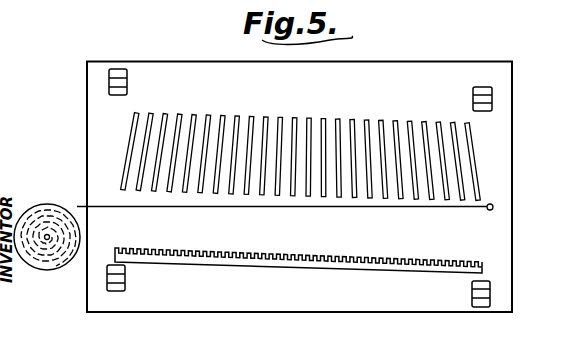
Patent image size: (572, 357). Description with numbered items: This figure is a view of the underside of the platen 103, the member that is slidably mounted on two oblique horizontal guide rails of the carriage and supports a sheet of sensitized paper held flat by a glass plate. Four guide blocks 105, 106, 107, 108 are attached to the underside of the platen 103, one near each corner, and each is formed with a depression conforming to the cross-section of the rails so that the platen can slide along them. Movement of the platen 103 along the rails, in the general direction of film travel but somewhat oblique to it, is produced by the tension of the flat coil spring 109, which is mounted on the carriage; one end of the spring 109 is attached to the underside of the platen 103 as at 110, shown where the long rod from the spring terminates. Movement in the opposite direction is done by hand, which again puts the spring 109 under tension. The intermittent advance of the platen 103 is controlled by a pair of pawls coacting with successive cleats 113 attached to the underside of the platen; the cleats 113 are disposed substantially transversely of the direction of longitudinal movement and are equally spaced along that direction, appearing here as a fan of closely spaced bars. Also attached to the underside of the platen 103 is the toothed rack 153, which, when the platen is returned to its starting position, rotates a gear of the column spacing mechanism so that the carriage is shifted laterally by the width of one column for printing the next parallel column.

The platen 103 is at (497, 143).
The guide block 105 is at (119, 69).
The guide block 106 is at (125, 287).
The guide block 107 is at (487, 88).
The guide block 108 is at (479, 299).
The flat coil spring 109 is at (42, 258).
The spring attachment point 110 is at (490, 210).
The cleats 113 is at (337, 117).
The rack 153 is at (448, 247).